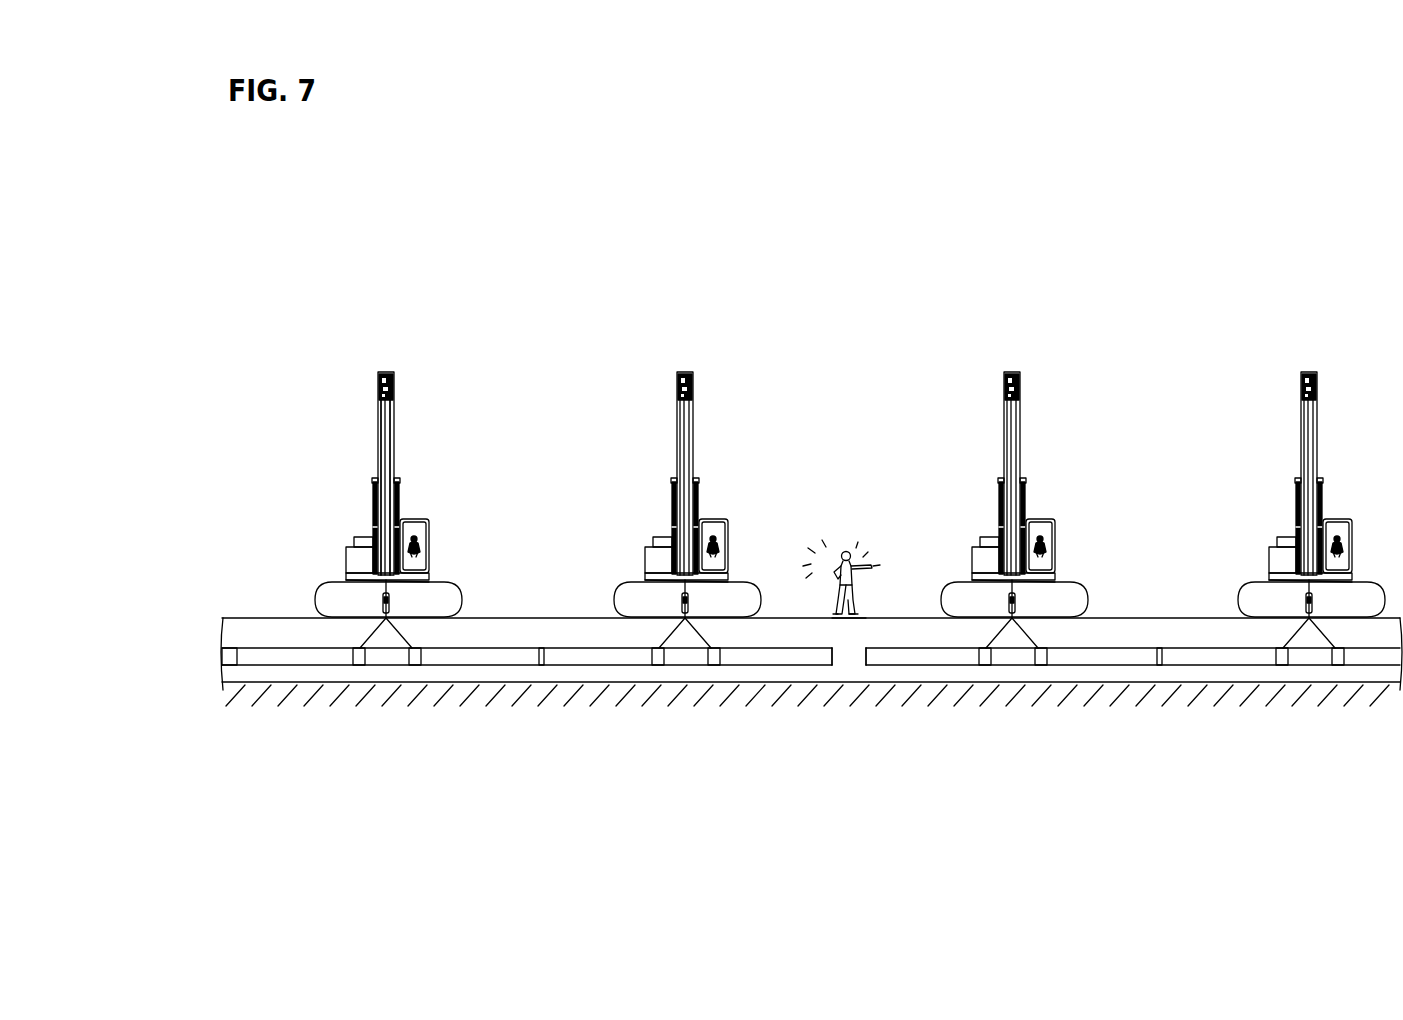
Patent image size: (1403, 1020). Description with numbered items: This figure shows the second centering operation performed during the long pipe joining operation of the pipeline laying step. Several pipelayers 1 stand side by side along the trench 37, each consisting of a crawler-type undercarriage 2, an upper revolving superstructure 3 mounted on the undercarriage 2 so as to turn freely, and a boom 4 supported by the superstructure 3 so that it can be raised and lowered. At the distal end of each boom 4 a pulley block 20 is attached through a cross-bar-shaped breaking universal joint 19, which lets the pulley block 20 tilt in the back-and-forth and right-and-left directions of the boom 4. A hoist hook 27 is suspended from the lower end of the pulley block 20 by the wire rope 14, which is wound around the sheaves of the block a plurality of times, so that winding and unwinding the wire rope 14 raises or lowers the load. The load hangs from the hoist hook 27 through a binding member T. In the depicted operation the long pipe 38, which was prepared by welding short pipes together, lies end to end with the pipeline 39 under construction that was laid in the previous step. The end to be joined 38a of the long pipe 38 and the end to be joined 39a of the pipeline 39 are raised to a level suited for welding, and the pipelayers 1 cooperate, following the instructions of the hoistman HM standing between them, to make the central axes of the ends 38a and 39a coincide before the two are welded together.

The pipelayer 1 is at (814, 490).
The crawler-type undercarriage 2 is at (313, 598).
The upper revolving superstructure 3 is at (443, 547).
The boom 4 is at (393, 424).
The wire rope 14 is at (393, 453).
The universal joint 19 is at (375, 386).
The pulley block 20 is at (375, 449).
The hoist hook 27 is at (387, 618).
The binding member T is at (388, 618).
The trench 37 is at (877, 640).
The long pipe 38 is at (573, 645).
The pipeline under construction 39 is at (1188, 648).
The end to be joined of the long pipe 38a is at (820, 660).
The end to be joined of the pipeline under construction 39a is at (883, 655).
The hoistman HM is at (846, 548).